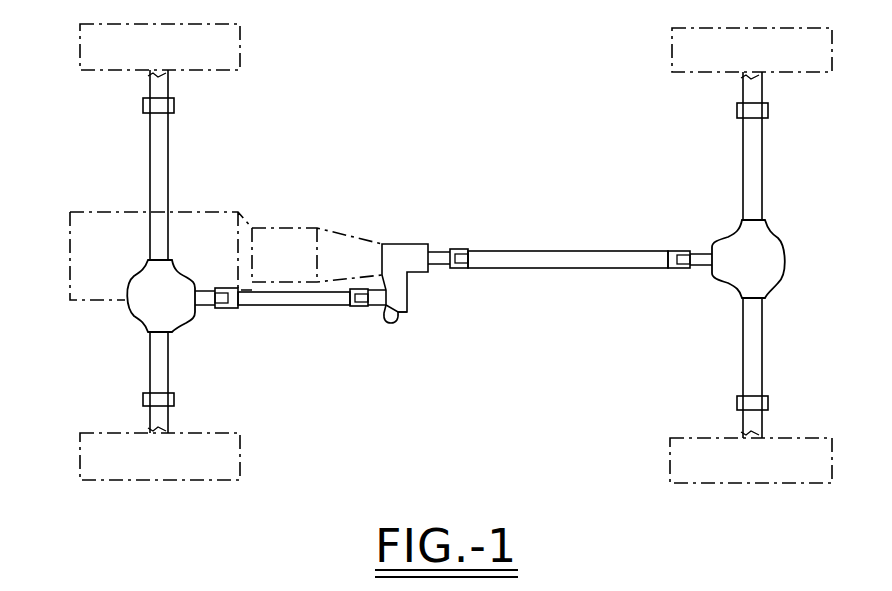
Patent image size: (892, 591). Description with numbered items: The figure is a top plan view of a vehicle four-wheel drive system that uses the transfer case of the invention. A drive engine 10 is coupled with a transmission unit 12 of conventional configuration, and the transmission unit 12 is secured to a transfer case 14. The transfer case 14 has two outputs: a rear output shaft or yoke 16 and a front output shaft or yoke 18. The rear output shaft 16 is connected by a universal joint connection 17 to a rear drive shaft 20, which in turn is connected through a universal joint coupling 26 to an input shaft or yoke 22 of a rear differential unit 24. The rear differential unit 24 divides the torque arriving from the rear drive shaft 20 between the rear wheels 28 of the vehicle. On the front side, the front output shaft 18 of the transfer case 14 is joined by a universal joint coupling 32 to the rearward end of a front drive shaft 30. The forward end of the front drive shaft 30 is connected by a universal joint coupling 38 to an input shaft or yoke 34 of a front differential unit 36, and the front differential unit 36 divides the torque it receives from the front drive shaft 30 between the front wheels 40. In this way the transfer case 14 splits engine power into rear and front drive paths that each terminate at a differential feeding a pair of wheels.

The drive engine 10 is at (106, 208).
The transmission unit 12 is at (299, 230).
The transfer case 14 is at (403, 240).
The rear output shaft 16 is at (441, 251).
The universal joint 17 is at (462, 269).
The front output shaft 18 is at (381, 306).
The rear drive shaft 20 is at (556, 251).
The input shaft 22 is at (703, 253).
The rear differential unit 24 is at (778, 248).
The universal joint coupling 26 is at (679, 269).
The rear wheels 28 is at (672, 42).
The front drive shaft 30 is at (272, 306).
The universal joint coupling 32 is at (356, 307).
The input shaft 34 is at (206, 306).
The front differential unit 36 is at (156, 318).
The universal joint coupling 38 is at (228, 309).
The front wheels 40 is at (242, 40).